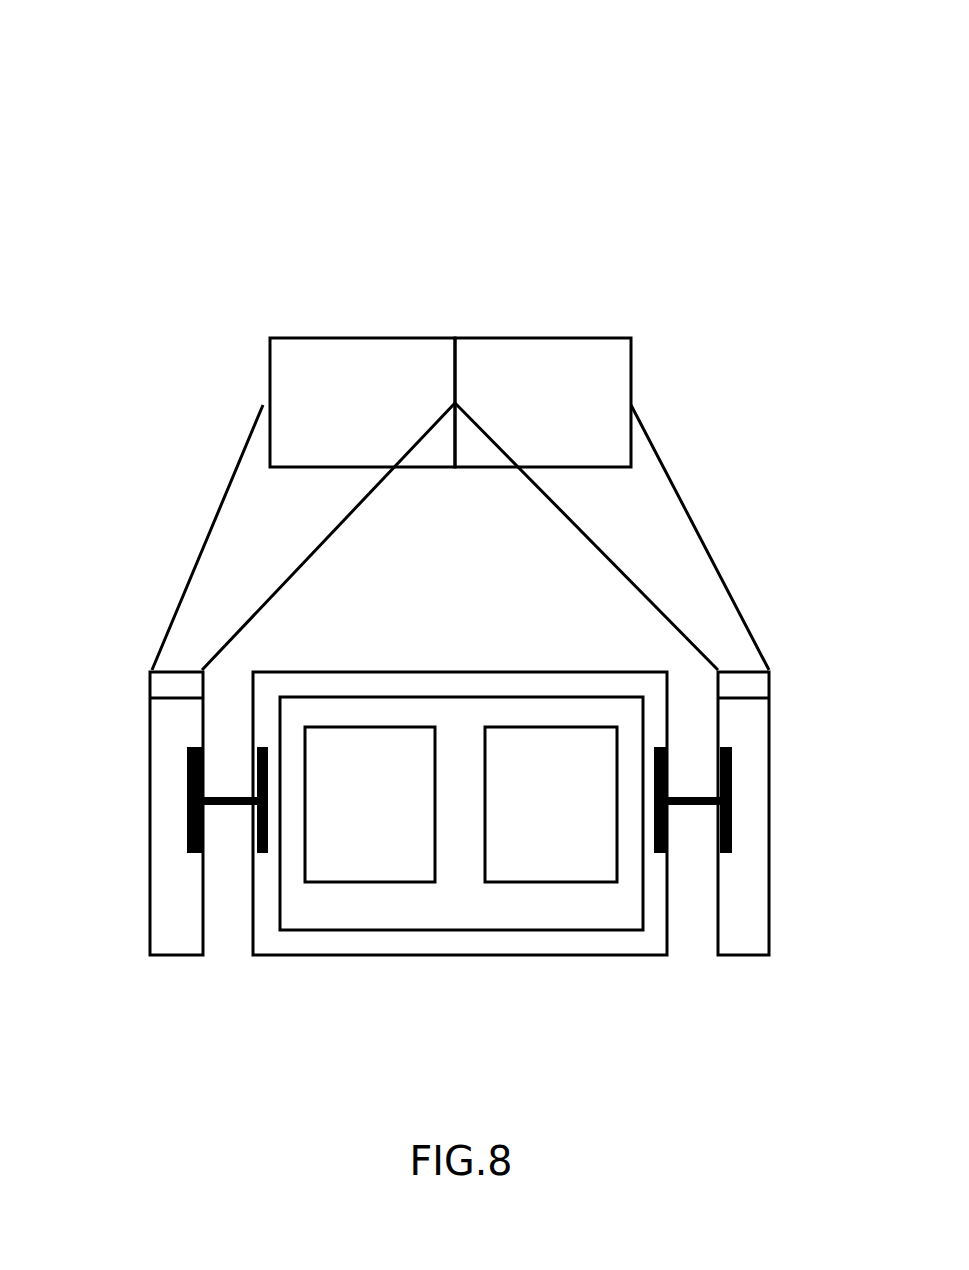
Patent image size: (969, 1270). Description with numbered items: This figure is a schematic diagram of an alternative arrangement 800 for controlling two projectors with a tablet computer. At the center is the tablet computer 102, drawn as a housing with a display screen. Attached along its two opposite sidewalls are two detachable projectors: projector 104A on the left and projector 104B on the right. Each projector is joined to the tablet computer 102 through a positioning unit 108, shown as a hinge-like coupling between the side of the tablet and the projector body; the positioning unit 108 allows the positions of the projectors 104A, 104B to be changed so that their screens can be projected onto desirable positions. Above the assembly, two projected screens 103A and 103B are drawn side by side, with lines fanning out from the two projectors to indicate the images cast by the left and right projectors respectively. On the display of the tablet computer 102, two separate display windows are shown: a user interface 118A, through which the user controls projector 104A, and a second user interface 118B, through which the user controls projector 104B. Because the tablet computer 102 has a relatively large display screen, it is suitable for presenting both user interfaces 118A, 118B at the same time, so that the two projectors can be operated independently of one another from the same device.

The alternative projector control arrangement 800 is at (769, 207).
The left projector 103A is at (362, 402).
The right projector 103B is at (543, 402).
The tablet computer 102 is at (430, 670).
The projector 104A is at (148, 753).
The projector 104B is at (773, 795).
The positioning unit 108 is at (232, 802).
The user interface 118A is at (370, 804).
The user interface 118B is at (551, 804).